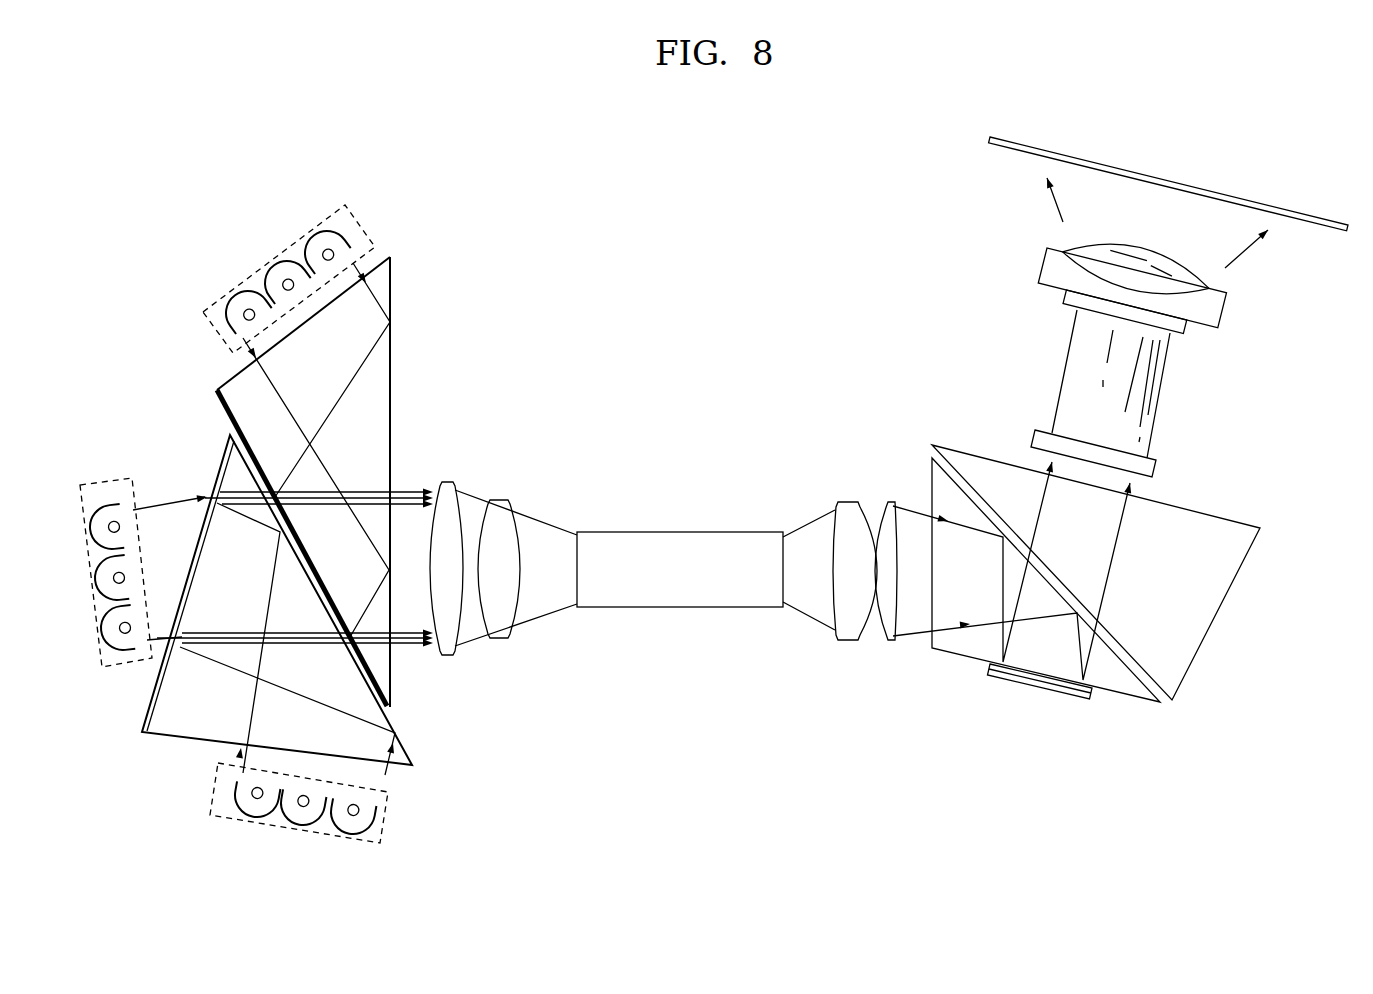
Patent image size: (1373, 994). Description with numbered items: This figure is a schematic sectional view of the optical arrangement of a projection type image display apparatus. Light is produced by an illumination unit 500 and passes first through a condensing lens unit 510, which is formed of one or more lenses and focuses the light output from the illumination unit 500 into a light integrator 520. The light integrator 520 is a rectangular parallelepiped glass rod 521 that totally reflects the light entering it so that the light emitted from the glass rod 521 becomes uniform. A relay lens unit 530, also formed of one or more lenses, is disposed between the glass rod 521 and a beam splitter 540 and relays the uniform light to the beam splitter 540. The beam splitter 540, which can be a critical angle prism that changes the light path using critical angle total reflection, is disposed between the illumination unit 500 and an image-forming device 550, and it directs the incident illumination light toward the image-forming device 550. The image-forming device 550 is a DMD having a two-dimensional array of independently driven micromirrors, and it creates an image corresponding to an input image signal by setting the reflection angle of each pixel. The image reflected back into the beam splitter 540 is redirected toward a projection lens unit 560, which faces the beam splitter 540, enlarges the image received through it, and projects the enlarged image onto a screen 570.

The illumination unit 500 is at (389, 217).
The condensing lens unit 510 is at (488, 462).
The light integrator 520 is at (645, 507).
The rectangular parallelepiped glass rod 521 is at (663, 532).
The relay lens unit 530 is at (860, 480).
The beam splitter 540 is at (1250, 572).
The image-forming device 550 is at (1048, 692).
The projection lens unit 560 is at (1233, 327).
The screen 570 is at (1310, 212).